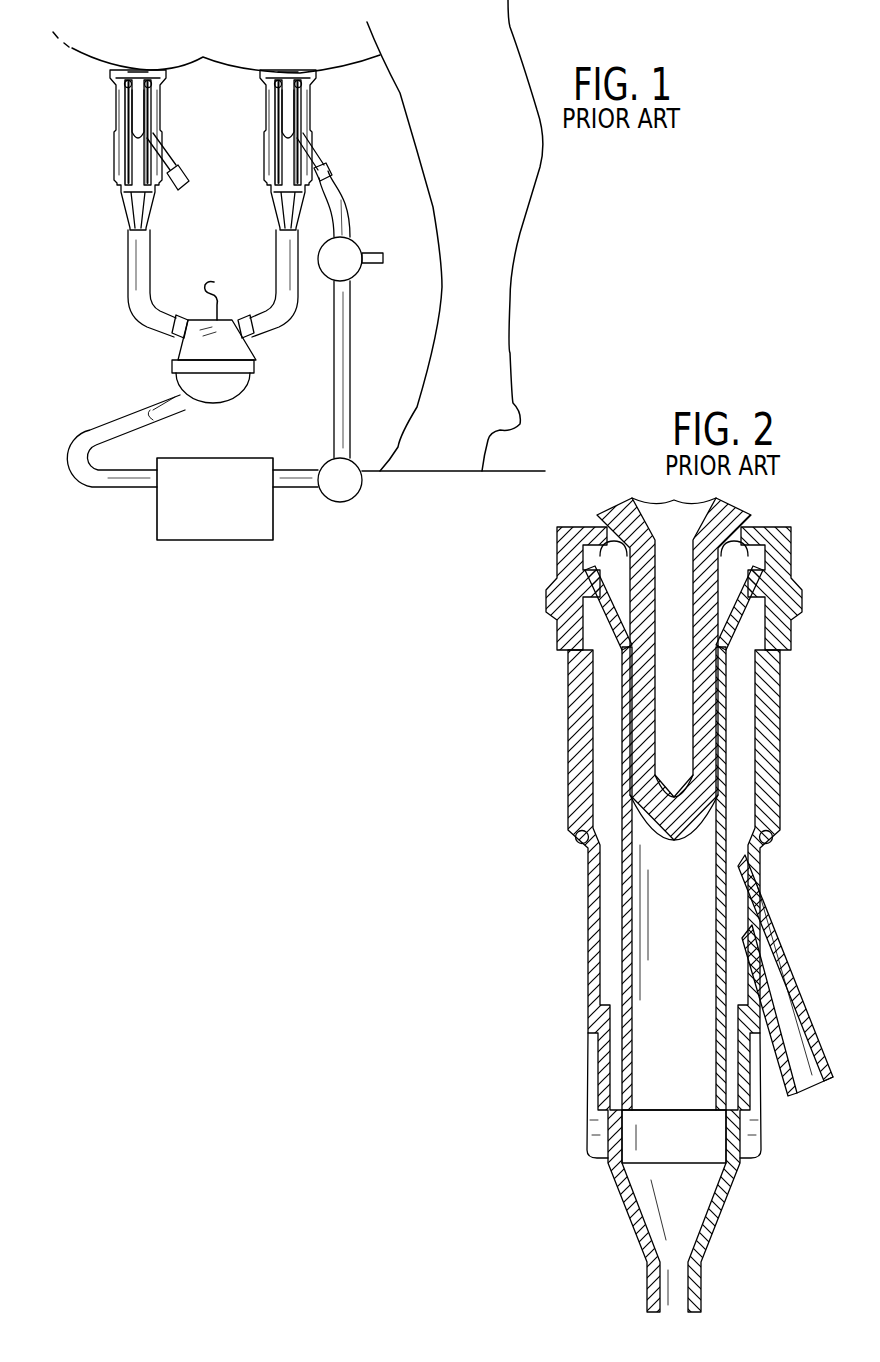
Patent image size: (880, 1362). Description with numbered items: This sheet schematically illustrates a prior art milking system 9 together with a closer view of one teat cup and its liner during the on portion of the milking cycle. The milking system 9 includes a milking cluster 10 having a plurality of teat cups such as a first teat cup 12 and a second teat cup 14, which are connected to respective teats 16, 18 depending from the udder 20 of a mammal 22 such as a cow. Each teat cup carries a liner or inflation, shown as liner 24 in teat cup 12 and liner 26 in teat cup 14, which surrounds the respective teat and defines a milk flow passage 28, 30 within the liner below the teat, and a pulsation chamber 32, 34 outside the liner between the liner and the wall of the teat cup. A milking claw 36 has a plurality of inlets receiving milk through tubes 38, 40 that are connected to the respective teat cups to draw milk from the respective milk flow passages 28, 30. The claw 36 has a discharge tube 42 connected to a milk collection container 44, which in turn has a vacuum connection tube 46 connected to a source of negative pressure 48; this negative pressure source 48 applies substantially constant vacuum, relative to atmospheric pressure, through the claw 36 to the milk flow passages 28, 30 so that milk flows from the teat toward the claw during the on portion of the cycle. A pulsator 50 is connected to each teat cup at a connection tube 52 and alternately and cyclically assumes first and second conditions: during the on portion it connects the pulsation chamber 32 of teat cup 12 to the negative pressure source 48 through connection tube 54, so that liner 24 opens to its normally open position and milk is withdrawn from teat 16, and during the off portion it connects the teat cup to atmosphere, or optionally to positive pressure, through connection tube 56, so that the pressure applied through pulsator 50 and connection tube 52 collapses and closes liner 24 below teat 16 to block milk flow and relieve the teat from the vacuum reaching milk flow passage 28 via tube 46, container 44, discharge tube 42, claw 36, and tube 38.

In FIG. 1, the milking system 9 is at (98, 518).
In FIG. 1, the milking cluster 10 is at (126, 366).
In FIG. 1, the teat cup 12 is at (262, 121).
In FIG. 2, the teat cup 12 is at (592, 897).
In FIG. 1, the teat cup 14 is at (112, 123).
In FIG. 1, the teat 16 is at (297, 78).
In FIG. 2, the teat 16 is at (652, 505).
In FIG. 1, the teat 18 is at (143, 76).
In FIG. 1, the udder 20 is at (352, 58).
In FIG. 1, the mammal 22 is at (508, 22).
In FIG. 1, the liner 24 is at (283, 138).
In FIG. 2, the liner 24 is at (628, 939).
In FIG. 1, the liner 26 is at (128, 150).
In FIG. 1, the milk flow passage 28 is at (288, 158).
In FIG. 2, the milk flow passage 28 is at (660, 975).
In FIG. 1, the milk flow passage 30 is at (136, 166).
In FIG. 1, the pulsation chamber 32 is at (305, 143).
In FIG. 2, the pulsation chamber 32 is at (738, 862).
In FIG. 1, the pulsation chamber 34 is at (150, 140).
In FIG. 1, the milking claw 36 is at (230, 380).
In FIG. 1, the tube 38 is at (283, 258).
In FIG. 1, the tube 40 is at (128, 270).
In FIG. 1, the discharge tube 42 is at (116, 412).
In FIG. 1, the milk collection container 44 is at (218, 540).
In FIG. 1, the vacuum connection tube 46 is at (290, 490).
In FIG. 1, the source of negative pressure 48 is at (352, 497).
In FIG. 1, the pulsator 50 is at (350, 279).
In FIG. 1, the connection tube 52 is at (348, 192).
In FIG. 1, the connection tube 54 is at (342, 380).
In FIG. 1, the connection tube 56 is at (370, 264).